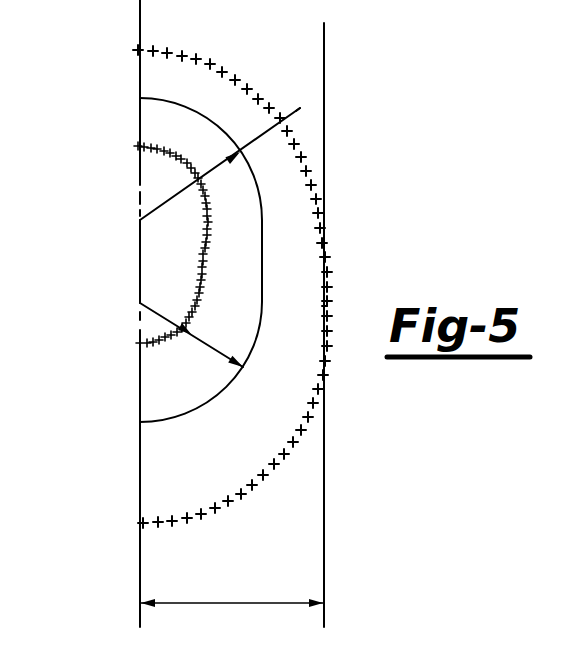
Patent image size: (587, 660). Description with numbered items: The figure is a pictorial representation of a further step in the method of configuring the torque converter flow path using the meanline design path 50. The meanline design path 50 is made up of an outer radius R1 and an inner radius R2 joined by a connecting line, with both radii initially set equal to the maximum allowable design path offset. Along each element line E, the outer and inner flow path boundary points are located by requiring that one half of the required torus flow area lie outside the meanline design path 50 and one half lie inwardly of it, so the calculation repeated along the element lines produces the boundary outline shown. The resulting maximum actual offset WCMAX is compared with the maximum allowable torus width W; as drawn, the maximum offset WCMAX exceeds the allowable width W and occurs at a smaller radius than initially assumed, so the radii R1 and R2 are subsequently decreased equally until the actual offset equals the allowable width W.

The meanline design path 50 is at (145, 422).
The outer radius R1 is at (153, 212).
The inner radius R2 is at (208, 348).
The element line E is at (307, 104).
The torus width W is at (325, 262).
The maximum actual offset WCMAX is at (328, 313).